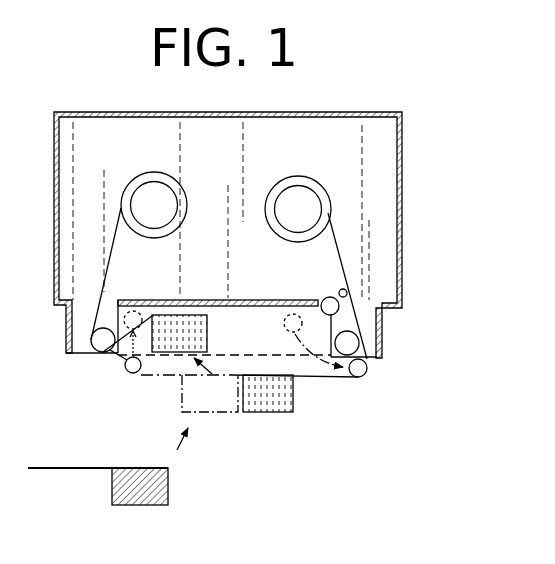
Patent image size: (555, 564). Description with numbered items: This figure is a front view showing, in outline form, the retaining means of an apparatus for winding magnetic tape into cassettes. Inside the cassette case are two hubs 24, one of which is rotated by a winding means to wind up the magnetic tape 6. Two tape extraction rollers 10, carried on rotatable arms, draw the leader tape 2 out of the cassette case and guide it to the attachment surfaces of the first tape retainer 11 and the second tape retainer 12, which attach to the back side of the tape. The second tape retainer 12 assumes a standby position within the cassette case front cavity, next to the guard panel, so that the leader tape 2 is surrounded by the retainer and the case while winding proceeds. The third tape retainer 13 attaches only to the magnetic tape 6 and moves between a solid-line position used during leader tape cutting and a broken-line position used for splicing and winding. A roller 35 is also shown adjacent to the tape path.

The leader tape 2 is at (319, 378).
The magnetic tape 6 is at (52, 470).
The tape extraction rollers 10 is at (137, 310).
The first tape retainer 11 is at (286, 412).
The second tape retainer 12 is at (207, 338).
The third tape retainer 13 is at (158, 501).
The hubs 24 is at (306, 189).
The pinch roller 35 is at (353, 343).